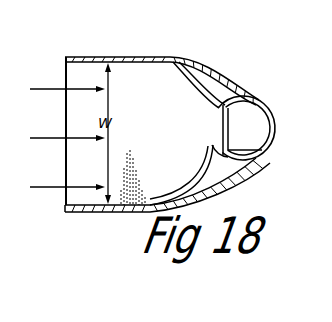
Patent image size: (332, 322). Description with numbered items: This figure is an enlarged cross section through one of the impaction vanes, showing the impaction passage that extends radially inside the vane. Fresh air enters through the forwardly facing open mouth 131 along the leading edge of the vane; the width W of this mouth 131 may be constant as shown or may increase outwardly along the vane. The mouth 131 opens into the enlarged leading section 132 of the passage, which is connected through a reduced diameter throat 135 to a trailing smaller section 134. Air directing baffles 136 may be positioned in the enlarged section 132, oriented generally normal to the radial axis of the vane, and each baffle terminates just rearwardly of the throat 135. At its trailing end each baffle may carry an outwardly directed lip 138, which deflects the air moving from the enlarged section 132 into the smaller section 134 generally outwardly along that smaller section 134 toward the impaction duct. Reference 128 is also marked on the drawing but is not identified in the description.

The top wall 128 is at (153, 55).
The open mouth 131 is at (67, 67).
The leading section 132 is at (153, 75).
The trailing smaller section 134 is at (271, 122).
The reduced diameter throat 135 is at (213, 146).
The air directing baffles 136 is at (178, 134).
The outwardly directed lip 138 is at (246, 128).